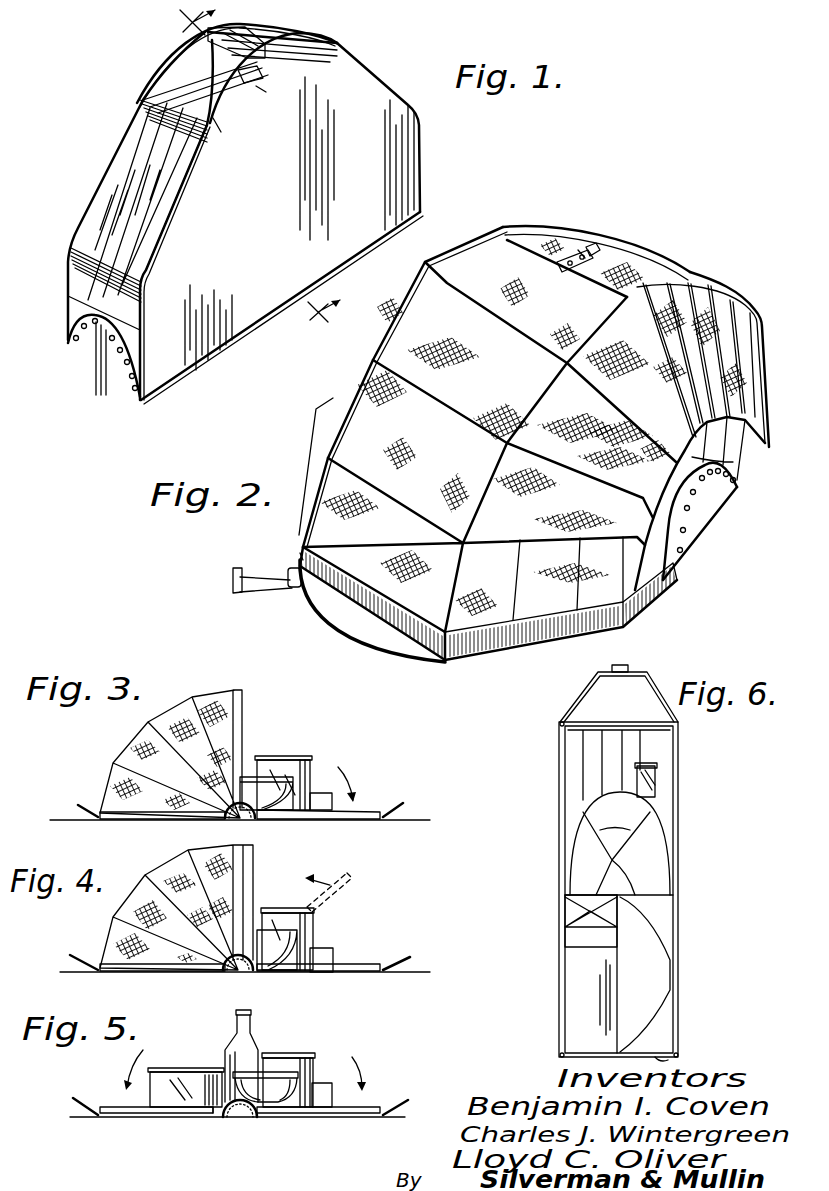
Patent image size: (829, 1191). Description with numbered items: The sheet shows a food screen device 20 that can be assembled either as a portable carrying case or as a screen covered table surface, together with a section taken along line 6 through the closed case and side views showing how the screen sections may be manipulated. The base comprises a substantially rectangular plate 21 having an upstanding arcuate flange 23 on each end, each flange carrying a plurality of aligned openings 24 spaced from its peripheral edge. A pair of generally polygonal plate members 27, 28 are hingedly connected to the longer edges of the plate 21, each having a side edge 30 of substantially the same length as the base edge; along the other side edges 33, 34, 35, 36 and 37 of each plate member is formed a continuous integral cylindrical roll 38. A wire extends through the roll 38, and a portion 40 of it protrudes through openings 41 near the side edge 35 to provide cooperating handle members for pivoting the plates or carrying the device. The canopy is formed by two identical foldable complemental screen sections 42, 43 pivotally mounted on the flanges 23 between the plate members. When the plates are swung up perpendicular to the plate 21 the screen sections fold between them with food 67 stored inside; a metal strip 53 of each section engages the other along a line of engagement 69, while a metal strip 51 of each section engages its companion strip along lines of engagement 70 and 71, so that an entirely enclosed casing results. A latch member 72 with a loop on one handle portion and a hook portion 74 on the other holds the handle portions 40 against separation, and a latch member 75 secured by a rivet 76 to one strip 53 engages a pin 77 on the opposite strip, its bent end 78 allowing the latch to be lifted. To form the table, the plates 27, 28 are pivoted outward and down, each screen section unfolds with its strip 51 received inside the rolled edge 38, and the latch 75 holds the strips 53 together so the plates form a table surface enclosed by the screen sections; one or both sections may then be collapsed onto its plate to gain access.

In FIG. 1, the section line 6— 6 is at (251, 176).
In FIG. 1, the food screen device 20 is at (317, 218).
In FIG. 2, the food screen device 20 is at (499, 429).
In FIG. 6, the rectangular plate 21 is at (668, 1060).
In FIG. 1, the arcuate flange 23 is at (107, 362).
In FIG. 2, the arcuate flange 23 is at (707, 520).
In FIG. 3, the arcuate flange 23 is at (238, 822).
In FIG. 4, the arcuate flange 23 is at (238, 975).
In FIG. 5, the arcuate flange 23 is at (240, 1120).
In FIG. 1, the openings 24 is at (87, 330).
In FIG. 2, the openings 24 is at (733, 490).
In FIG. 5, the plate member 27 is at (170, 1115).
In FIG. 6, the plate member 27 is at (559, 893).
In FIG. 1, the plate member 28 is at (296, 190).
In FIG. 5, the plate member 28 is at (282, 1118).
In FIG. 6, the plate member 28 is at (678, 880).
In FIG. 1, the side edge 30 is at (333, 273).
In FIG. 1, the side edge 33 is at (144, 335).
In FIG. 1, the side edge 34 is at (170, 235).
In FIG. 1, the side edge 35 is at (260, 95).
In FIG. 1, the side edge 36 is at (387, 86).
In FIG. 1, the side edge 37 is at (422, 130).
In FIG. 2, the cylindrical roll 38 is at (333, 598).
In FIG. 1, the handle portion 40 is at (268, 22).
In FIG. 2, the handle portion 40 is at (750, 292).
In FIG. 3, the handle portion 40 is at (78, 805).
In FIG. 4, the handle portion 40 is at (70, 955).
In FIG. 5, the handle portion 40 is at (240, 1106).
In FIG. 6, the handle portion 40 is at (575, 700).
In FIG. 1, the openings 41 is at (216, 130).
In FIG. 2, the openings 41 is at (300, 553).
In FIG. 2, the screen section 42 is at (447, 460).
In FIG. 3, the screen section 42 is at (133, 748).
In FIG. 4, the screen section 42 is at (143, 890).
In FIG. 5, the screen section 42 is at (213, 1115).
In FIG. 2, the screen section 43 is at (678, 280).
In FIG. 3, the screen section 43 is at (266, 818).
In FIG. 5, the screen section 43 is at (268, 1117).
In FIG. 1, the metal strip 51 is at (118, 302).
In FIG. 2, the metal strip 51 is at (473, 652).
In FIG. 3, the metal strip 51 is at (142, 815).
In FIG. 4, the metal strip 51 is at (143, 968).
In FIG. 5, the metal strip 51 is at (128, 1112).
In FIG. 1, the metal strip 53 is at (147, 124).
In FIG. 2, the metal strip 53 is at (507, 228).
In FIG. 3, the food 67 is at (296, 752).
In FIG. 4, the food 67 is at (278, 906).
In FIG. 5, the food 67 is at (283, 1053).
In FIG. 6, the food 67 is at (644, 868).
In FIG. 1, the line of engagement 69 is at (118, 222).
In FIG. 1, the line of engagement 70 is at (125, 182).
In FIG. 1, the line of engagement 71 is at (145, 195).
In FIG. 1, the latch member 72 is at (236, 29).
In FIG. 2, the latch member 72 is at (272, 590).
In FIG. 6, the latch member 72 is at (625, 658).
In FIG. 2, the hook portion 74 is at (235, 570).
In FIG. 1, the latch member 75 is at (240, 86).
In FIG. 2, the latch member 75 is at (582, 255).
In FIG. 2, the rivet 76 is at (592, 248).
In FIG. 2, the pin 77 is at (568, 258).
In FIG. 2, the end of latch member 78 is at (560, 272).